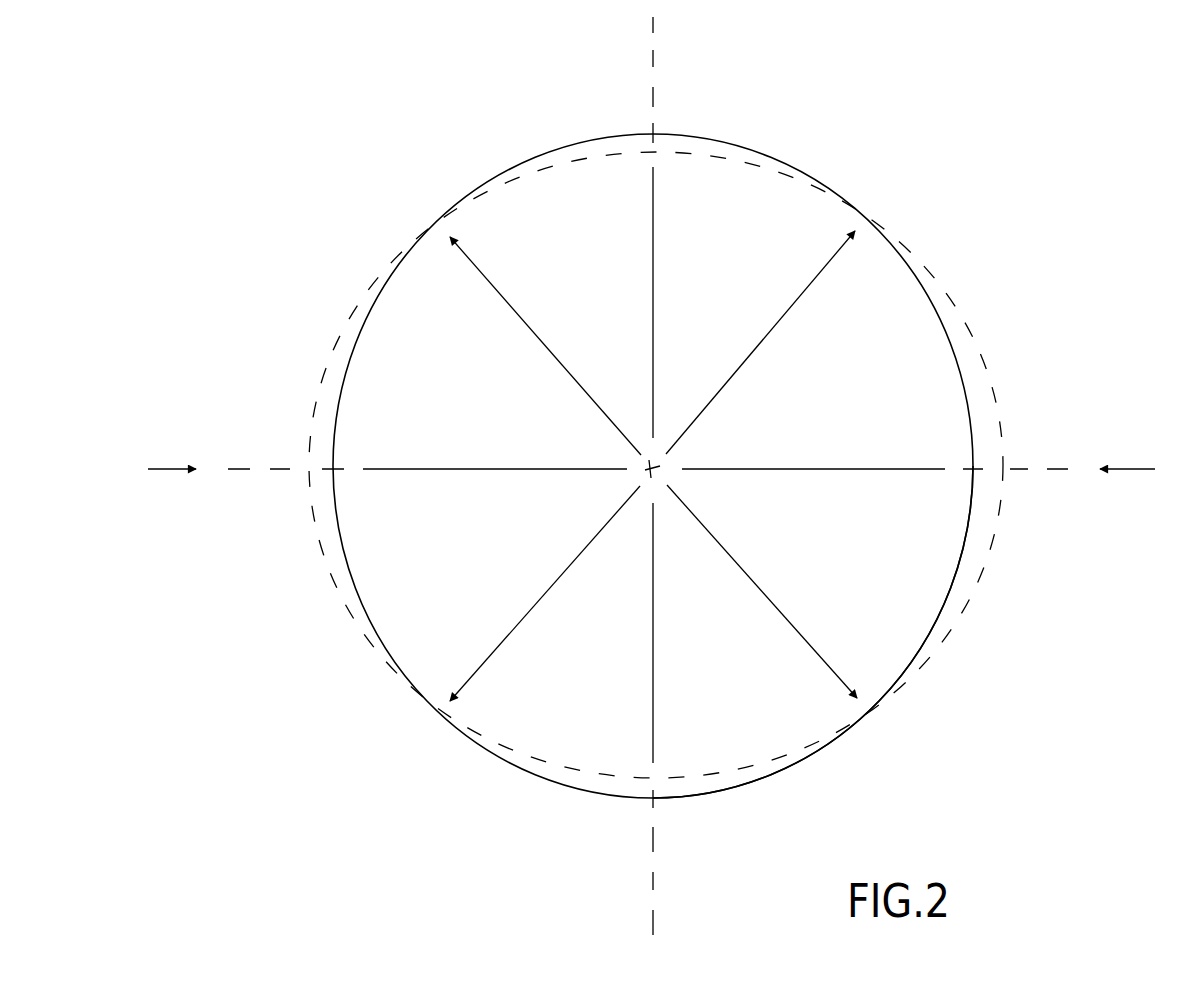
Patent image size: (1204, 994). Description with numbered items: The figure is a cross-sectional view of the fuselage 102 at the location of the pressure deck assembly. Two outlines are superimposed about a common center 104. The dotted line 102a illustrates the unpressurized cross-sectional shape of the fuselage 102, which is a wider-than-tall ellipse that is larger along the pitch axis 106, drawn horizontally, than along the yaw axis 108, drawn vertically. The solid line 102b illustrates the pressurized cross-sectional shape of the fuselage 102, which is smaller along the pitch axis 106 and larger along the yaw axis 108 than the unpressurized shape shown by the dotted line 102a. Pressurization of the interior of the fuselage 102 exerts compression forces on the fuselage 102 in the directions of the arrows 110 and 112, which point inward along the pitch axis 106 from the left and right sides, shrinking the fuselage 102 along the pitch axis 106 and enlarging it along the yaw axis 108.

The fuselage 102 is at (866, 96).
The dotted line 102a is at (967, 315).
The solid line 102b is at (942, 612).
The center of membrane 104 is at (652, 468).
The pitch axis 106 is at (235, 472).
The yaw axis 108 is at (655, 927).
The arrow 110 is at (1134, 468).
The arrow 112 is at (163, 469).